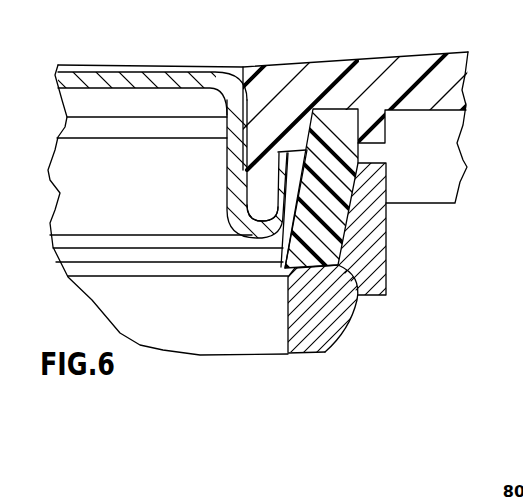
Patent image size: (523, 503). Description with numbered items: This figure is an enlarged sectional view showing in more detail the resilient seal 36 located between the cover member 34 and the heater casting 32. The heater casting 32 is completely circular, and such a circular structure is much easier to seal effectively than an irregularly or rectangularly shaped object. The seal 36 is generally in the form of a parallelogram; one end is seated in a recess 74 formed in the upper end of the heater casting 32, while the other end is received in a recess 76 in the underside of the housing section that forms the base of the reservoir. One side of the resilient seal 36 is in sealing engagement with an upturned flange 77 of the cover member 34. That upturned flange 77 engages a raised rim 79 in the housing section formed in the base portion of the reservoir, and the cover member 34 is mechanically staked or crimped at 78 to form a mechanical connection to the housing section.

The heater casting 32 is at (374, 239).
The cover member 34 is at (207, 64).
The resilient seal 36 is at (336, 135).
The recess 74 is at (358, 297).
The recess 76 is at (340, 137).
The upturned flange 77 is at (283, 236).
The staked or crimped connection 78 is at (230, 132).
The raised rim 79 is at (263, 193).